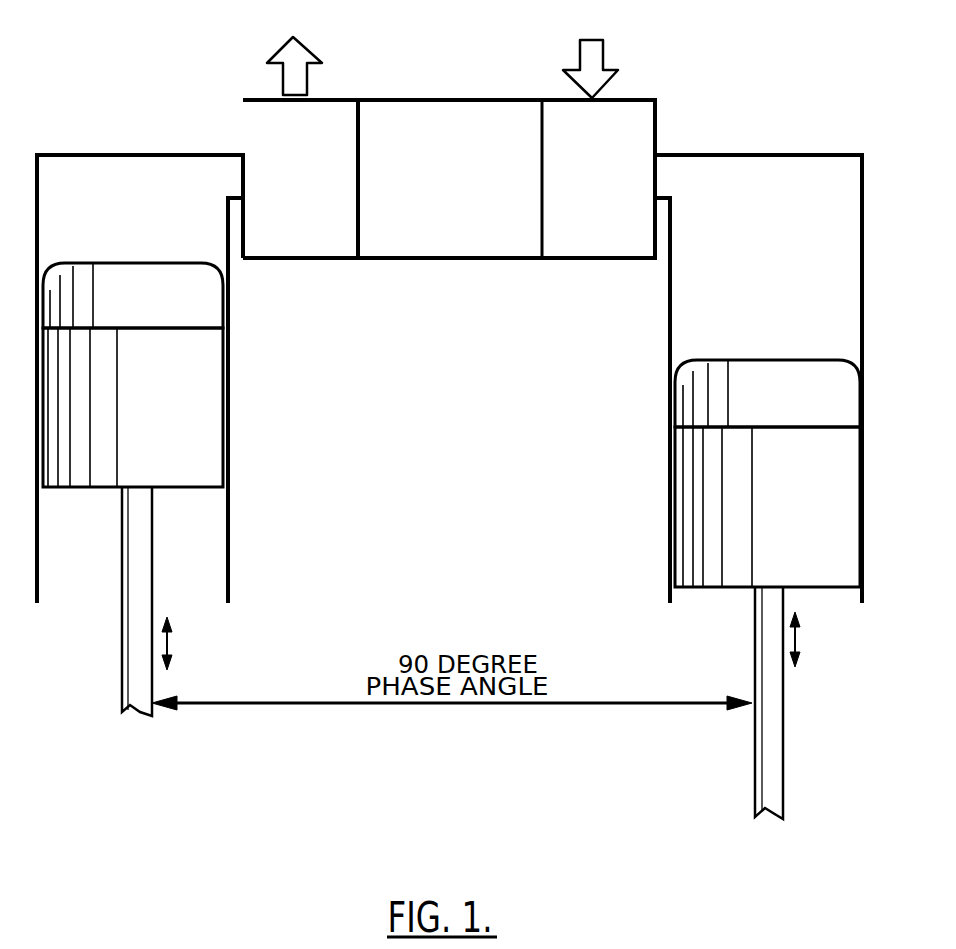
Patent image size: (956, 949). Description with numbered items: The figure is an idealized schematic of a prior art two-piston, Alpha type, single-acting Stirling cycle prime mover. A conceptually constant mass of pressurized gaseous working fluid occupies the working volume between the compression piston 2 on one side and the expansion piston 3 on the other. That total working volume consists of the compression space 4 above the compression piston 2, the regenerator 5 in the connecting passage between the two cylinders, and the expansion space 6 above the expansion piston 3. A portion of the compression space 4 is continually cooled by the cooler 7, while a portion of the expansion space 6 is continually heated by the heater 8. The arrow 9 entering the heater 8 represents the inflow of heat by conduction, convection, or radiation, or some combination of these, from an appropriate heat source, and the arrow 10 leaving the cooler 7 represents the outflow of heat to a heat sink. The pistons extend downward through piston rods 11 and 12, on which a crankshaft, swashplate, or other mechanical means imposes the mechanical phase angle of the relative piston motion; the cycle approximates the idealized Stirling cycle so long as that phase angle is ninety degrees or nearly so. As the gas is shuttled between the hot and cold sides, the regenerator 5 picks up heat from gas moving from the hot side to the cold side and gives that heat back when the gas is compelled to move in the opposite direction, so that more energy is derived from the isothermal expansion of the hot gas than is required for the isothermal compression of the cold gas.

The compression piston 2 is at (164, 417).
The expansion piston 3 is at (792, 512).
The compression space 4 is at (144, 217).
The regenerator 5 is at (460, 192).
The expansion space 6 is at (777, 248).
The cooler 7 is at (312, 192).
The heater 8 is at (612, 192).
The arrow 9 is at (594, 59).
The arrow 10 is at (302, 57).
The piston rod 11 is at (146, 622).
The piston rod 12 is at (777, 720).